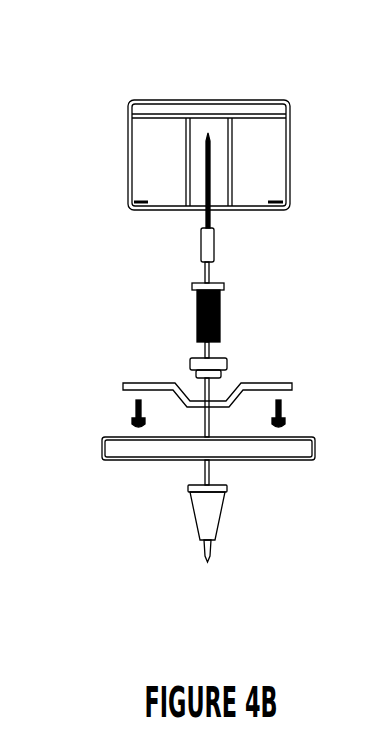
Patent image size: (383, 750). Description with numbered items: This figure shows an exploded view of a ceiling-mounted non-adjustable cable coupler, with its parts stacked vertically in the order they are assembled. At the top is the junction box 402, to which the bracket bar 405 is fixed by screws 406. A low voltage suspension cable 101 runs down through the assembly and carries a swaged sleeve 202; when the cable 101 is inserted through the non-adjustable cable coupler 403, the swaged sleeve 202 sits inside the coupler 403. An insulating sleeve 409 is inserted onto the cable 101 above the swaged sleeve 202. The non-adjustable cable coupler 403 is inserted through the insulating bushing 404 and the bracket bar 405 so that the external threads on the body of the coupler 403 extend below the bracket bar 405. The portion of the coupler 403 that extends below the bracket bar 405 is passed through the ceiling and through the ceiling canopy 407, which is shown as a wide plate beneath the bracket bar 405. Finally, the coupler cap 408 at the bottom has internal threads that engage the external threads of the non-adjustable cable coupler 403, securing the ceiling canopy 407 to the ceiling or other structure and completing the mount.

The junction box 402 is at (250, 99).
The insulating sleeve 409 is at (210, 182).
The swaged sleeve 202 is at (202, 229).
The non-adjustable cable coupler 403 is at (223, 287).
The insulating bushing 404 is at (228, 362).
The bracket bar 405 is at (148, 383).
The screws 406 is at (136, 412).
The ceiling canopy 407 is at (290, 460).
The low voltage suspension cable 101 is at (207, 477).
The coupler cap 408 is at (223, 524).